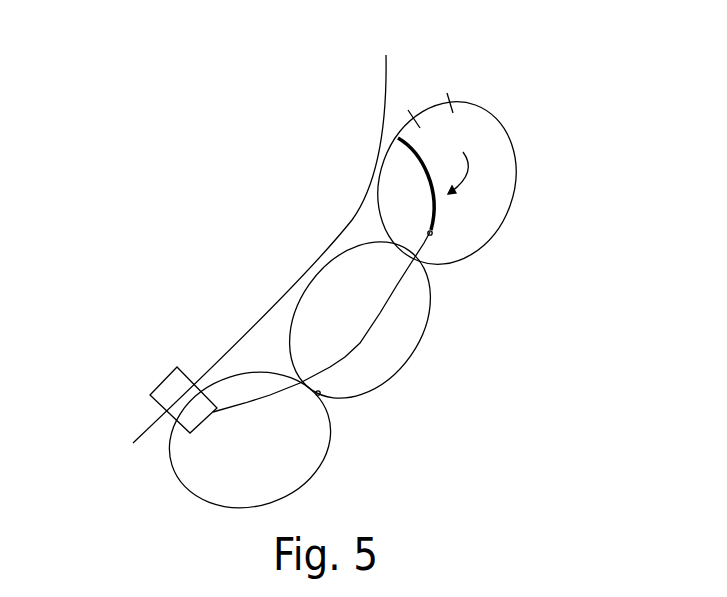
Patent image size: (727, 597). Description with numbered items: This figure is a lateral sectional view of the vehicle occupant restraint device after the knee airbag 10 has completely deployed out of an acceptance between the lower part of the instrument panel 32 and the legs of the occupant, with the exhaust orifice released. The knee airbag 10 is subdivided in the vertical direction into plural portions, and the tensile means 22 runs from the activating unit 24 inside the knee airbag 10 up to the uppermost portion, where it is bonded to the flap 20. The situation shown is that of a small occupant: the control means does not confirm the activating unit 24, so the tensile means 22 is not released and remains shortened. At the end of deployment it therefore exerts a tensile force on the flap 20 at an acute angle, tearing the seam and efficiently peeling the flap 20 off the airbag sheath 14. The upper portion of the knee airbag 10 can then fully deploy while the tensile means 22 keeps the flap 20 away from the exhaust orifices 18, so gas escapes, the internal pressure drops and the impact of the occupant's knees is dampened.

The knee airbag 10 is at (537, 113).
The airbag sheath 14 is at (397, 380).
The exhaust orifices 18 is at (432, 107).
The flap 20 is at (443, 210).
The tensile means 22 is at (380, 313).
The activating unit 24 is at (163, 382).
The instrument panel 32 is at (388, 70).